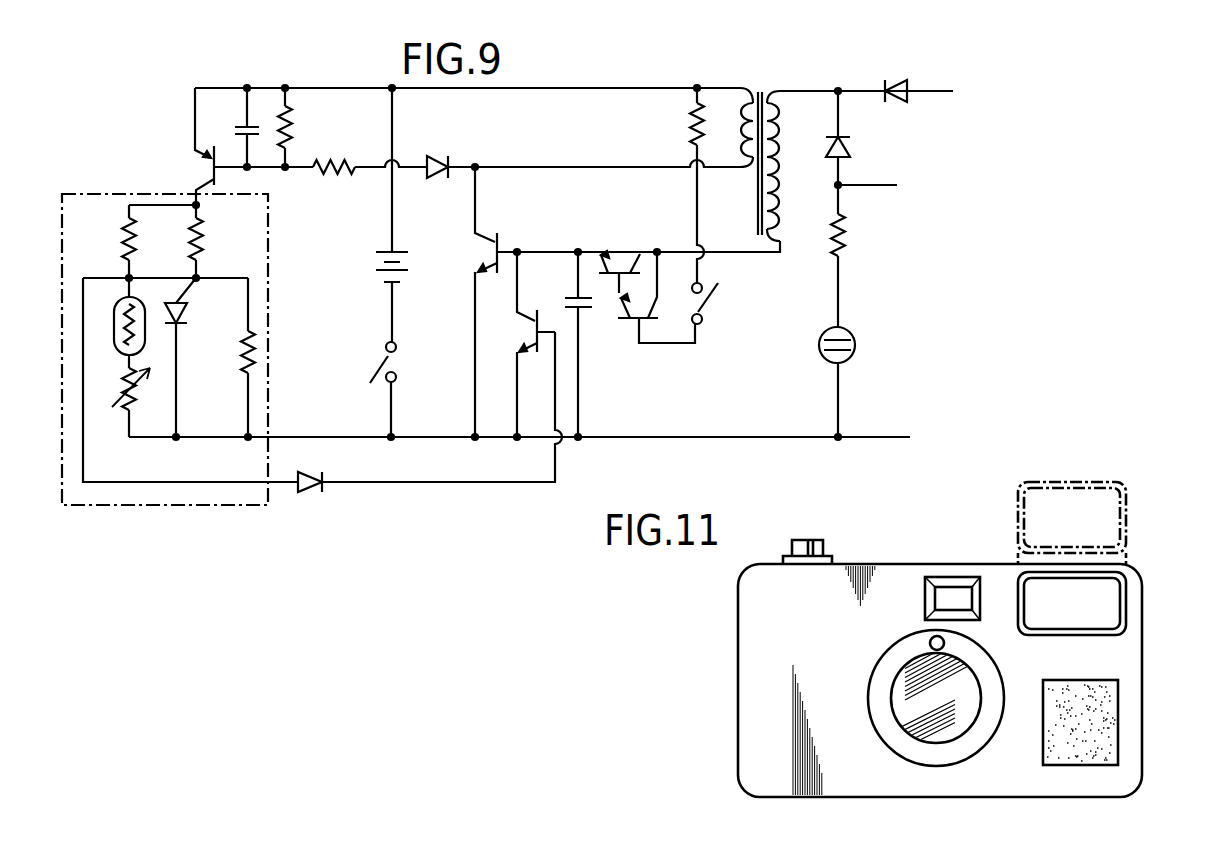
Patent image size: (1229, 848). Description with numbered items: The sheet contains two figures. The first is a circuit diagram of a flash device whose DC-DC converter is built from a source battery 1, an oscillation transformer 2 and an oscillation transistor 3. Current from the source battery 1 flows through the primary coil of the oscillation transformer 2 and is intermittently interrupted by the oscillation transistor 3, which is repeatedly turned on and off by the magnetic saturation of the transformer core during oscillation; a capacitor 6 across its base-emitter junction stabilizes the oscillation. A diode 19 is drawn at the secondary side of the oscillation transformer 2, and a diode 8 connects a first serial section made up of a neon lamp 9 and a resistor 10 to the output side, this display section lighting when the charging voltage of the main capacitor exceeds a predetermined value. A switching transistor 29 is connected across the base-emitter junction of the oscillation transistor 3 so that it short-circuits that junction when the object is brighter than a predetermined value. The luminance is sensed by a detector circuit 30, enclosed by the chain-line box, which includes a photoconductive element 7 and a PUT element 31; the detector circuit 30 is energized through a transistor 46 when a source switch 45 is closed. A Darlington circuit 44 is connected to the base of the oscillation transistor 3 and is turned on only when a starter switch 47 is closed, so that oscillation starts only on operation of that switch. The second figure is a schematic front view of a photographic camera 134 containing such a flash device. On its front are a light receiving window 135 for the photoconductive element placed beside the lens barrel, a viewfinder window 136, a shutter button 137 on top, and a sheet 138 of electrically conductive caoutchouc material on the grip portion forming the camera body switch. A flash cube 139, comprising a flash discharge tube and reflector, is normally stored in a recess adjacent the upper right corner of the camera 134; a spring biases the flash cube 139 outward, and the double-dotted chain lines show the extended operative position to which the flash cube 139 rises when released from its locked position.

In FIG. 9, the source battery 1 is at (375, 265).
In FIG. 9, the oscillation transformer 2 is at (768, 81).
In FIG. 9, the oscillation transistor 3 is at (483, 258).
In FIG. 9, the capacitor 6 is at (596, 303).
In FIG. 9, the photoconductive element 7 is at (118, 328).
In FIG. 9, the diode 8 is at (849, 148).
In FIG. 9, the neon lamp 9 is at (856, 345).
In FIG. 9, the resistor 10 is at (849, 242).
In FIG. 9, the rectifier diode 19 is at (898, 101).
In FIG. 9, the switching transistor 29 is at (526, 338).
In FIG. 9, the detector circuit 30 is at (93, 190).
In FIG. 9, the PUT element 31 is at (185, 318).
In FIG. 9, the Darlington circuit 44 is at (646, 262).
In FIG. 9, the source switch 45 is at (377, 363).
In FIG. 9, the transistor 46 is at (197, 176).
In FIG. 9, the starter switch 47 is at (712, 300).
In FIG. 11, the photographic camera 134 is at (757, 628).
In FIG. 11, the light receiving window 135 is at (930, 641).
In FIG. 11, the viewfinder window 136 is at (955, 597).
In FIG. 11, the shutter release button 137 is at (810, 548).
In FIG. 11, the sheet of electrically conductive caoutchouc material 138 is at (1100, 723).
In FIG. 11, the flash cube 139 is at (1083, 480).